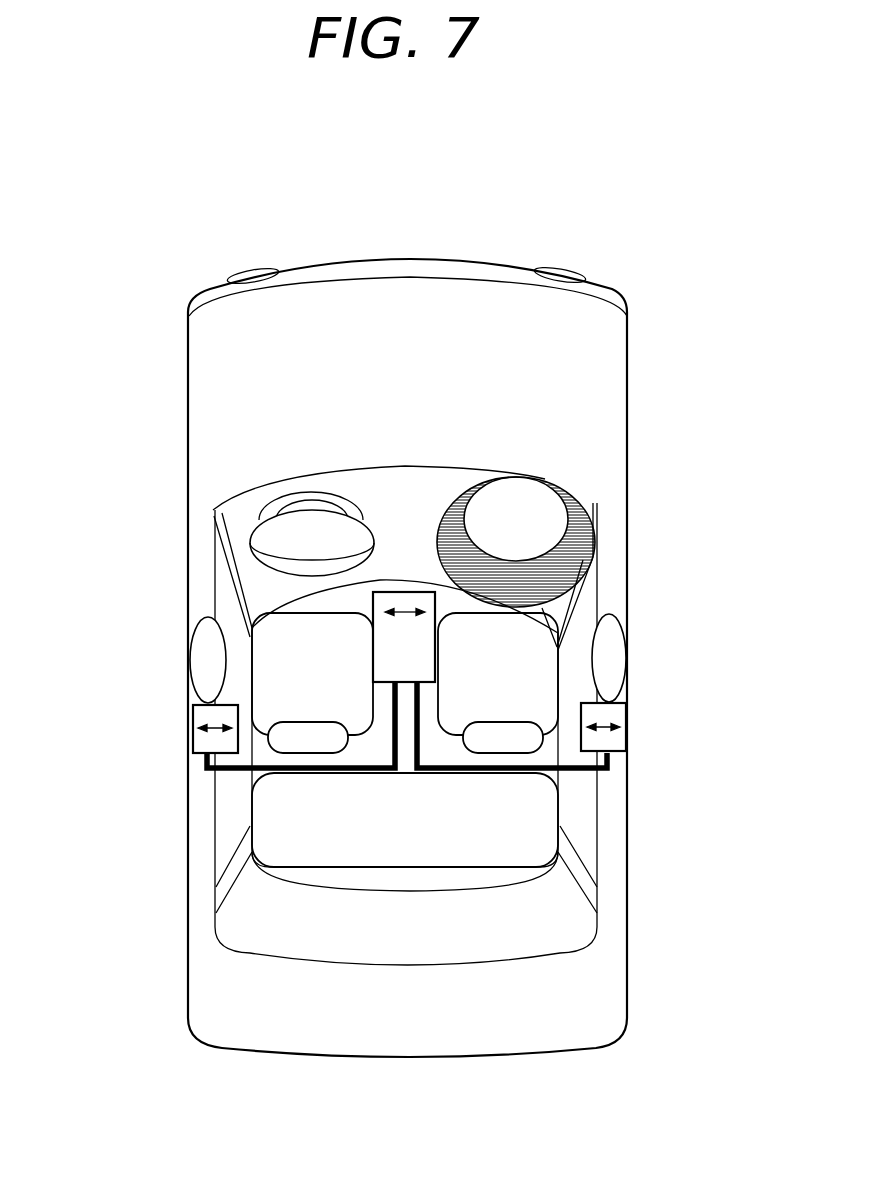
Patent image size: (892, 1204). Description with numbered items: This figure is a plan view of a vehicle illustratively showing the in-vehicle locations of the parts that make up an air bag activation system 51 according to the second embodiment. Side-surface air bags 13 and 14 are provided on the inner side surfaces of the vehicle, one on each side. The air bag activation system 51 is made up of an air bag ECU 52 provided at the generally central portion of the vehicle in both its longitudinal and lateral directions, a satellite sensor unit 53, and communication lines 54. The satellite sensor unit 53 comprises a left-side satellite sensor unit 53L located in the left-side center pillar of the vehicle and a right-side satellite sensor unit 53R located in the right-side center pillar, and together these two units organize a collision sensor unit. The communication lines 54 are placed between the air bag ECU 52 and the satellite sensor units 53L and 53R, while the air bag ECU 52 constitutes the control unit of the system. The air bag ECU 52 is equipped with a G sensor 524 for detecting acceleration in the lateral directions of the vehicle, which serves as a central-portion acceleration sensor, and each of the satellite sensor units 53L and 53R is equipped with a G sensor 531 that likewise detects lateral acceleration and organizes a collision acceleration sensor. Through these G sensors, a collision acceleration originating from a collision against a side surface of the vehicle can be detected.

The air bag activation system 51 is at (472, 240).
The air bag ECU 52 is at (420, 648).
The G sensor 524 is at (400, 604).
The side-surface air bag 13 is at (200, 650).
The side-surface air bag 14 is at (612, 640).
The satellite sensor unit 53 is at (397, 809).
The left-side satellite sensor unit 53L is at (196, 740).
The right-side satellite sensor unit 53R is at (583, 738).
The G sensor 531 is at (212, 727).
The communication lines 54 is at (398, 704).